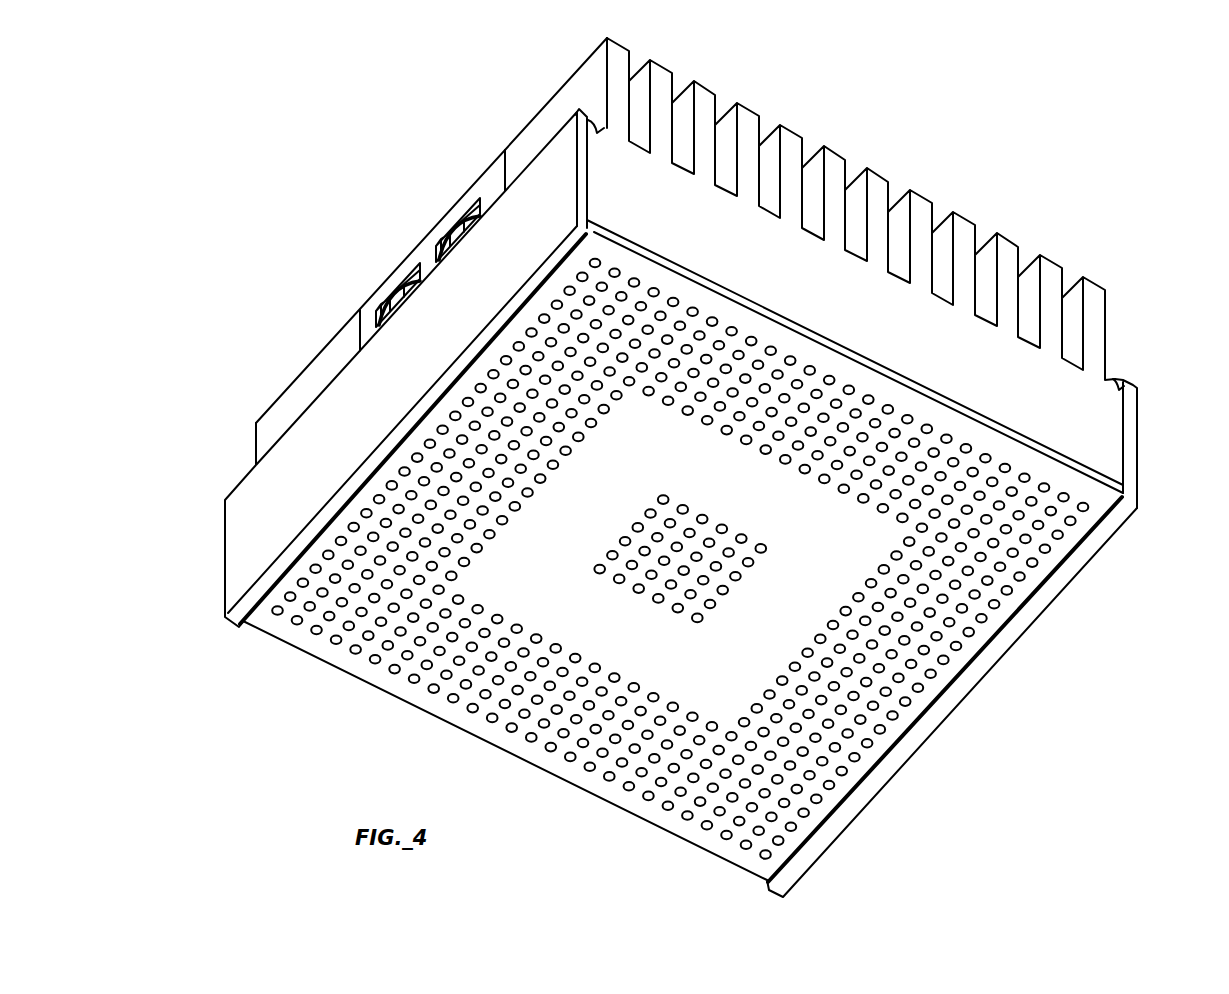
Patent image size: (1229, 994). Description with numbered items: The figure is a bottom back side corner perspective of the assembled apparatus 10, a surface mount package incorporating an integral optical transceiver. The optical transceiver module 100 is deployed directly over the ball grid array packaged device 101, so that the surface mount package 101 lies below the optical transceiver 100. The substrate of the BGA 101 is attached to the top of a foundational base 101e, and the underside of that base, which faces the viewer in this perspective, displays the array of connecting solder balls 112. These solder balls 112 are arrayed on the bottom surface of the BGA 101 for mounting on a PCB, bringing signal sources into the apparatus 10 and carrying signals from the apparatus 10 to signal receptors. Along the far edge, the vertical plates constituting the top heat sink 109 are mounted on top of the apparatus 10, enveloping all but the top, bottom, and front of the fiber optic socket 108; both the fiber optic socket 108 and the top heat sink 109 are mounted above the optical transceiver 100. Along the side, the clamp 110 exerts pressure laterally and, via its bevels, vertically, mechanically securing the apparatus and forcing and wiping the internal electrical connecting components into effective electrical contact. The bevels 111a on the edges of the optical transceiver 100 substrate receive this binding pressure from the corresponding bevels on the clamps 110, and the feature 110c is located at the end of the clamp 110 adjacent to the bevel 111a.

The apparatus 10 is at (275, 137).
The optical transceiver module 100 is at (685, 230).
The ball grid array packaged device 101 is at (688, 548).
The foundational base 101e is at (688, 558).
The fiber optic socket 108 is at (425, 240).
The top heat sink 109 is at (878, 178).
The clamp 110 is at (722, 338).
The panel tab 110c is at (582, 118).
The bevels 111a is at (602, 126).
The connecting solder balls 112 is at (768, 821).